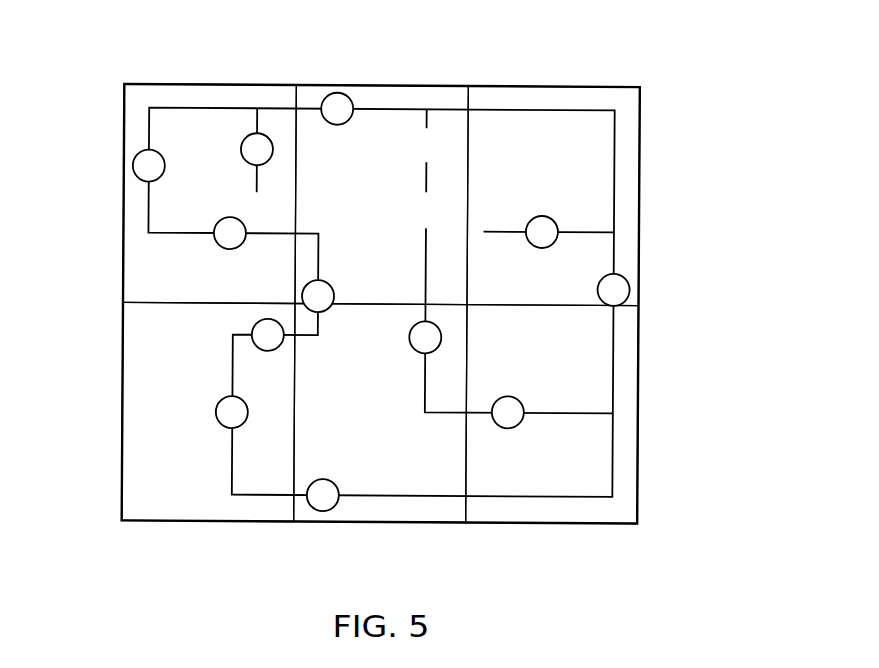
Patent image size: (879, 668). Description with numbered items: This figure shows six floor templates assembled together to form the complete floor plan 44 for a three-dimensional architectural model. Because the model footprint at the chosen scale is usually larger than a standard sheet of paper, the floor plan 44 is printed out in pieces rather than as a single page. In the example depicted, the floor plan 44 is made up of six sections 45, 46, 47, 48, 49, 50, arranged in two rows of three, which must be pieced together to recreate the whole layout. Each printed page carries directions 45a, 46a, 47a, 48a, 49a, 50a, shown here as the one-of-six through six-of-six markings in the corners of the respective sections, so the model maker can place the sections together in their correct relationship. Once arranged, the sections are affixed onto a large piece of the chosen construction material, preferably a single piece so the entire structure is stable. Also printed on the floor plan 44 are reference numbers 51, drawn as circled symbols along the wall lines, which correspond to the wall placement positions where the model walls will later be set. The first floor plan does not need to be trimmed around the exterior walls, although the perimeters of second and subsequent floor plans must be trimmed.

The floor plan 44 is at (710, 76).
The floor plan section 45 is at (229, 200).
The floor plan section 46 is at (400, 202).
The floor plan section 47 is at (573, 200).
The floor plan section 48 is at (187, 390).
The floor plan section 49 is at (399, 392).
The floor plan section 50 is at (571, 390).
The directions 45a is at (202, 282).
The directions 46a is at (390, 282).
The directions 47a is at (557, 280).
The directions 48a is at (202, 502).
The directions 49a is at (373, 518).
The directions 50a is at (546, 518).
The reference numbers 51 is at (325, 98).